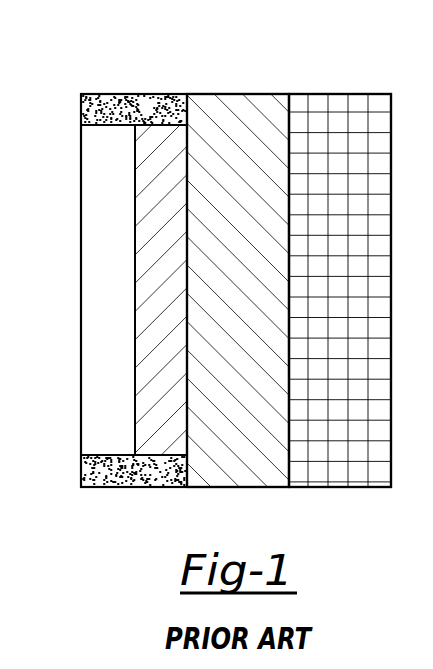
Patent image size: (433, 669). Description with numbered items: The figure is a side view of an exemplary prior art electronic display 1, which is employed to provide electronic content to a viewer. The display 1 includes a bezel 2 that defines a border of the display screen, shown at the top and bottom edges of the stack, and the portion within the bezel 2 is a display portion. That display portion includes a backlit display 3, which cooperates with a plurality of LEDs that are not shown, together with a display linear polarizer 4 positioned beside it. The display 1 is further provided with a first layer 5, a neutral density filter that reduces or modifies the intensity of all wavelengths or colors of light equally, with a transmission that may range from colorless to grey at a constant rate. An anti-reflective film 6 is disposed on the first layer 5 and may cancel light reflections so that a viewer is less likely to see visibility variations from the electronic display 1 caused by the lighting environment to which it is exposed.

The electronic display 1 is at (126, 70).
The bezel 2 is at (100, 115).
The backlit display 3 is at (98, 245).
The display linear polarizer 4 is at (147, 343).
The first layer 5 is at (236, 95).
The anti-reflective film 6 is at (338, 95).